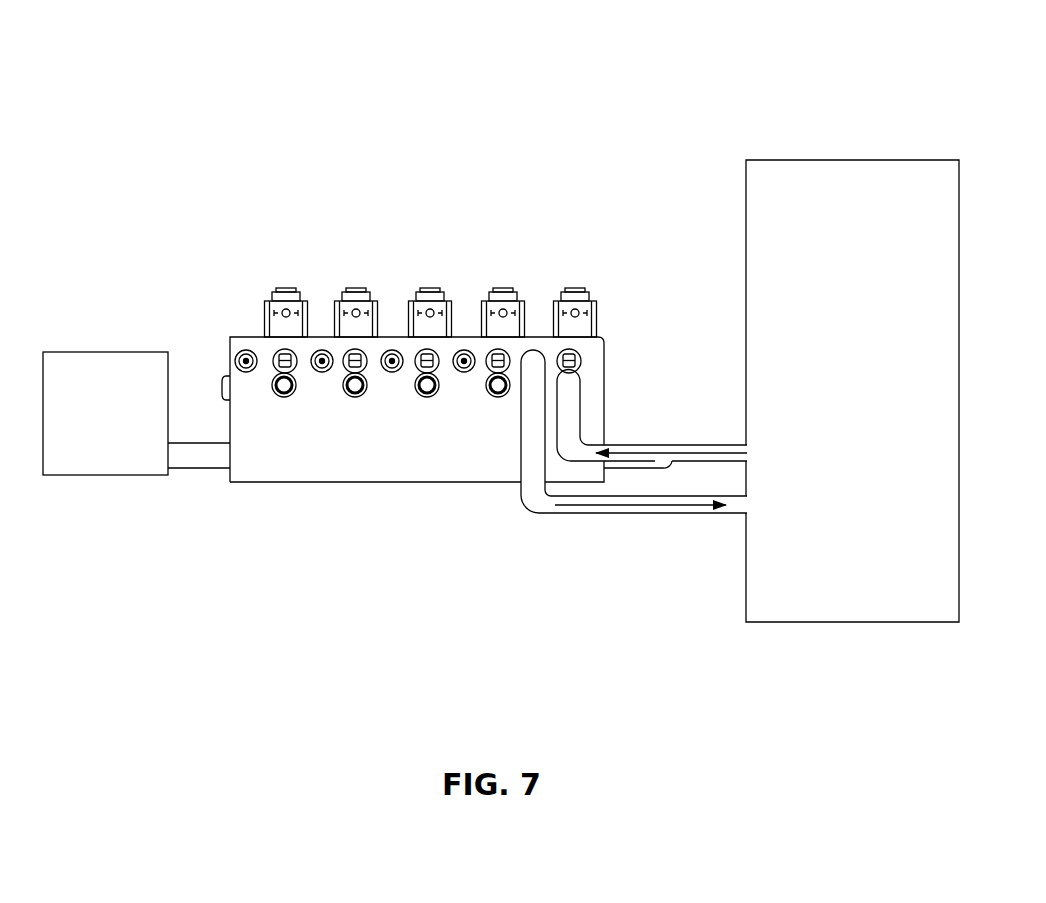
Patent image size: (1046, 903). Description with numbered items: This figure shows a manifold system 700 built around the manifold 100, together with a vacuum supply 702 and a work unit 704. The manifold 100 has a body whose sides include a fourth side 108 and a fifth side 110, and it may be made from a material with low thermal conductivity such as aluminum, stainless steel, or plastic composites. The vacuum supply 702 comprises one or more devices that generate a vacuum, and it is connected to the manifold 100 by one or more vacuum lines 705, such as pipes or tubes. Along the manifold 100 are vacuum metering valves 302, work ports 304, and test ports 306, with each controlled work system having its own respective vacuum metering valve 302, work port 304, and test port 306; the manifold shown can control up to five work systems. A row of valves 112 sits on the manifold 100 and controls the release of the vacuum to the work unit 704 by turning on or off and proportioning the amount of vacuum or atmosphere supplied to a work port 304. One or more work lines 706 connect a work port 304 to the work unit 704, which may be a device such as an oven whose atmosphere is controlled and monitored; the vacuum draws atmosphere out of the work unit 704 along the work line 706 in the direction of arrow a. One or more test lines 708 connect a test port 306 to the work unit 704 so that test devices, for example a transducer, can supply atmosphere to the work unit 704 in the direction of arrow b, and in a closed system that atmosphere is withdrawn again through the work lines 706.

The manifold system 700 is at (474, 54).
The manifold 100 is at (344, 155).
The vacuum supply 702 is at (90, 454).
The work unit 704 is at (845, 386).
The vacuum line 705 is at (194, 473).
The work line 706 is at (630, 437).
The test line 708 is at (631, 520).
The fourth side 108 is at (611, 348).
The fifth side 110 is at (226, 341).
The valve 112 is at (263, 289).
The vacuum metering valve 302 is at (271, 348).
The work port 304 is at (498, 399).
The test port 306 is at (463, 376).